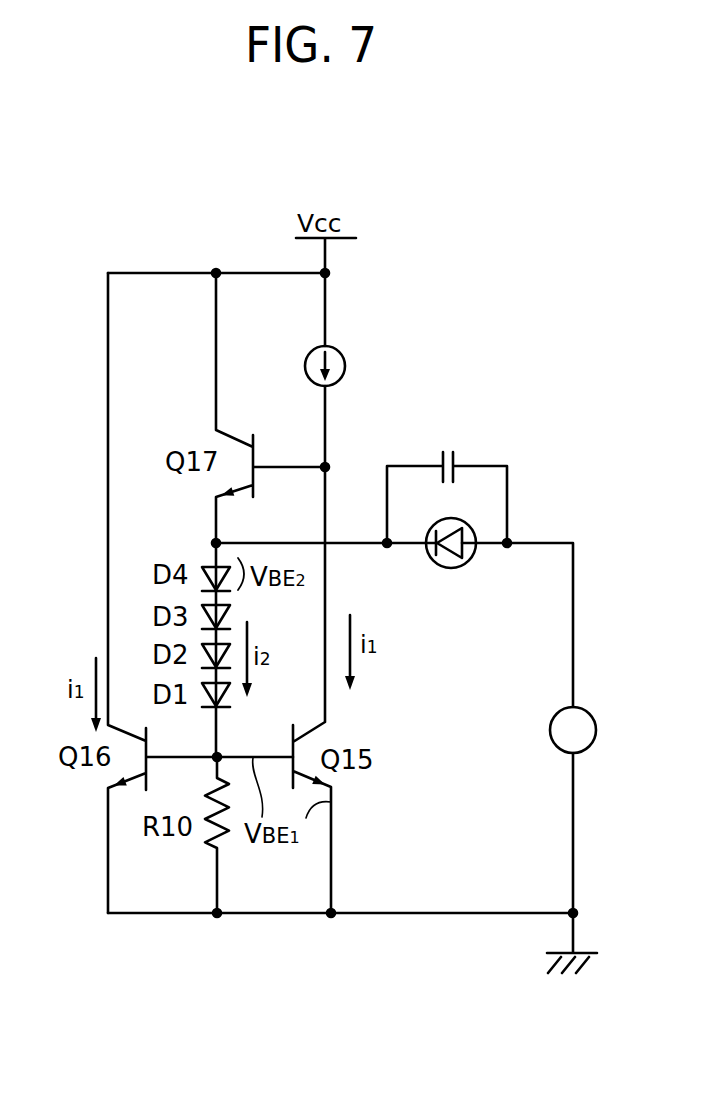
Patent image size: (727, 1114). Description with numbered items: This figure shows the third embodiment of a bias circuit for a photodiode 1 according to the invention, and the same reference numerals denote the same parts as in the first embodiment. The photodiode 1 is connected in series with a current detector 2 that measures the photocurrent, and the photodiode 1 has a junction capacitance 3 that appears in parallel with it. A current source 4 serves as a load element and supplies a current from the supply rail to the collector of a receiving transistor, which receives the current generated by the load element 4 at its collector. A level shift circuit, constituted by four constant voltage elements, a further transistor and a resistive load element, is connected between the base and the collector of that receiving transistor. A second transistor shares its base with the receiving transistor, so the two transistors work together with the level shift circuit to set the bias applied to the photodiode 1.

The photodiode 1 is at (451, 568).
The current detector 2 is at (552, 722).
The junction capacitance 3 is at (446, 451).
The current source 4 is at (345, 363).